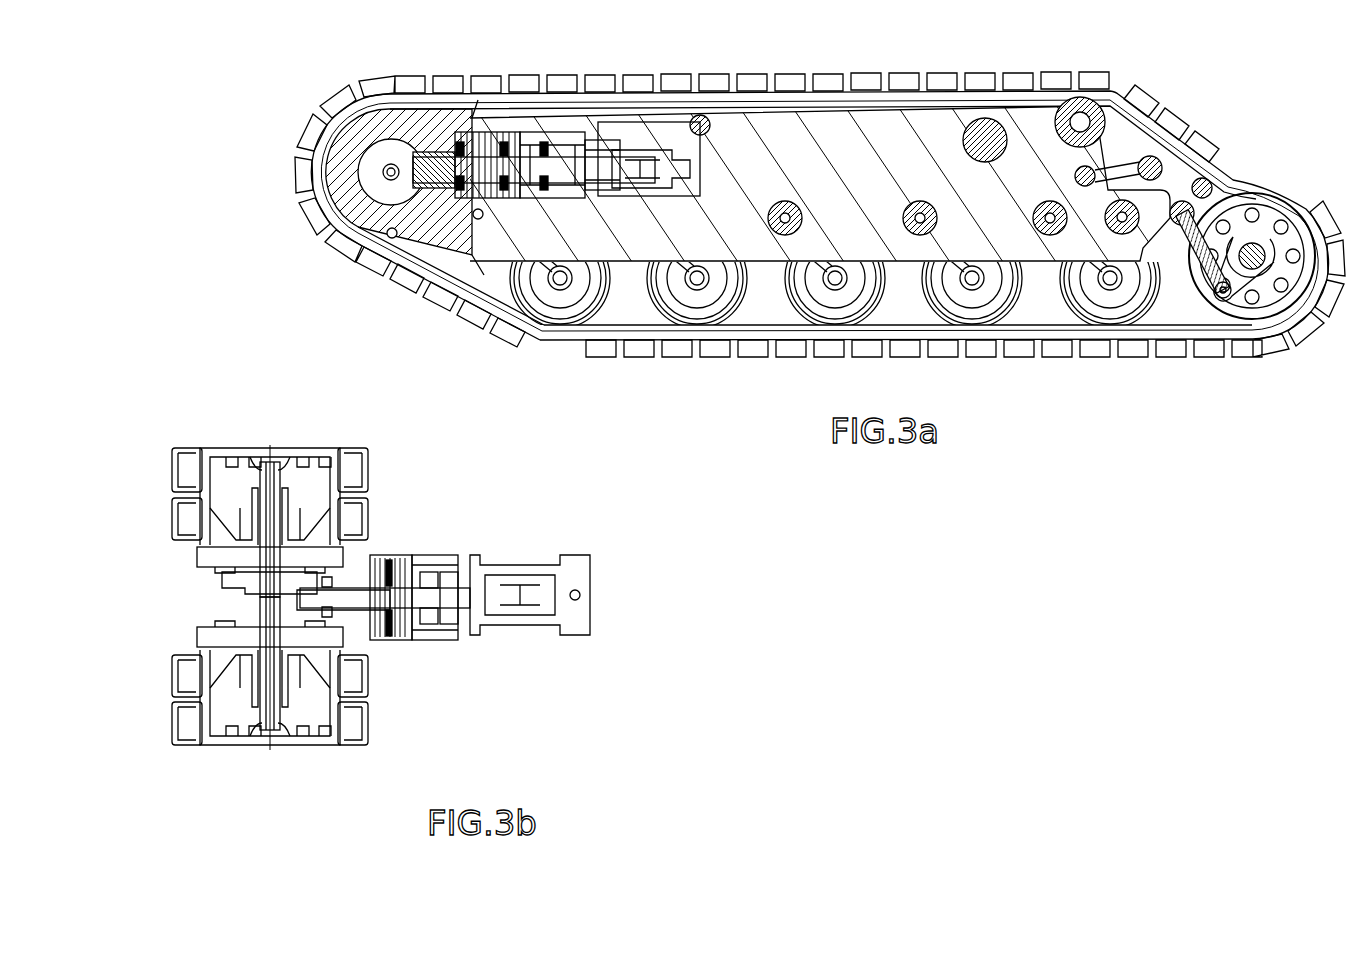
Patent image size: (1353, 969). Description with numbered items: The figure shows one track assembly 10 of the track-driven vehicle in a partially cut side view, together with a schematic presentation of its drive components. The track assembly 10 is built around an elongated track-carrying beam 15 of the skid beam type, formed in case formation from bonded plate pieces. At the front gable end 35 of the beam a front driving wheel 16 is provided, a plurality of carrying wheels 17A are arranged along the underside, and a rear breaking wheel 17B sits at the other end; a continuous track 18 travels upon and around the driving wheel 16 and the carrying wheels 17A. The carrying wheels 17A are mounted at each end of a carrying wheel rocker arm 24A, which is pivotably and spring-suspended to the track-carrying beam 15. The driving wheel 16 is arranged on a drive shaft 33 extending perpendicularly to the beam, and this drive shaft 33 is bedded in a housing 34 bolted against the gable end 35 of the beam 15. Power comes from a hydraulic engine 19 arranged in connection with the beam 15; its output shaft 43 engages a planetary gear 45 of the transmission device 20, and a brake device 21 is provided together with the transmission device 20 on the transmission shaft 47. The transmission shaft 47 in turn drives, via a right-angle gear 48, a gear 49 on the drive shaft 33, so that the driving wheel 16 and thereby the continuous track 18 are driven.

In FIG. 3a, the track assembly 10 is at (744, 225).
In FIG. 3a, the track-carrying beam 15 is at (837, 130).
In FIG. 3a, the front driving wheel 16 is at (343, 203).
In FIG. 3b, the front driving wheel 16 is at (211, 600).
In FIG. 3a, the carrying wheels 17A is at (672, 312).
In FIG. 3a, the rear breaking wheel 17B is at (1260, 290).
In FIG. 3a, the continuous track 18 is at (998, 357).
In FIG. 3a, the engine 19 is at (650, 128).
In FIG. 3b, the engine 19 is at (537, 580).
In FIG. 3a, the transmission device 20 is at (518, 128).
In FIG. 3b, the transmission device 20 is at (427, 575).
In FIG. 3a, the brake device 21 is at (470, 130).
In FIG. 3b, the brake device 21 is at (390, 553).
In FIG. 3a, the carrying wheel rocker arm 24A is at (830, 285).
In FIG. 3a, the drive shaft 33 is at (360, 130).
In FIG. 3b, the drive shaft 33 is at (242, 608).
In FIG. 3a, the housing 34 is at (433, 203).
In FIG. 3a, the gable end 35 is at (478, 212).
In FIG. 3a, the output shaft 43 is at (555, 128).
In FIG. 3b, the output shaft 43 is at (455, 600).
In FIG. 3a, the planetary gear 45 is at (560, 283).
In FIG. 3a, the transmission shaft 47 is at (425, 118).
In FIG. 3b, the transmission shaft 47 is at (350, 597).
In FIG. 3b, the right-angle gear 48 is at (287, 693).
In FIG. 3b, the gear 49 is at (290, 480).